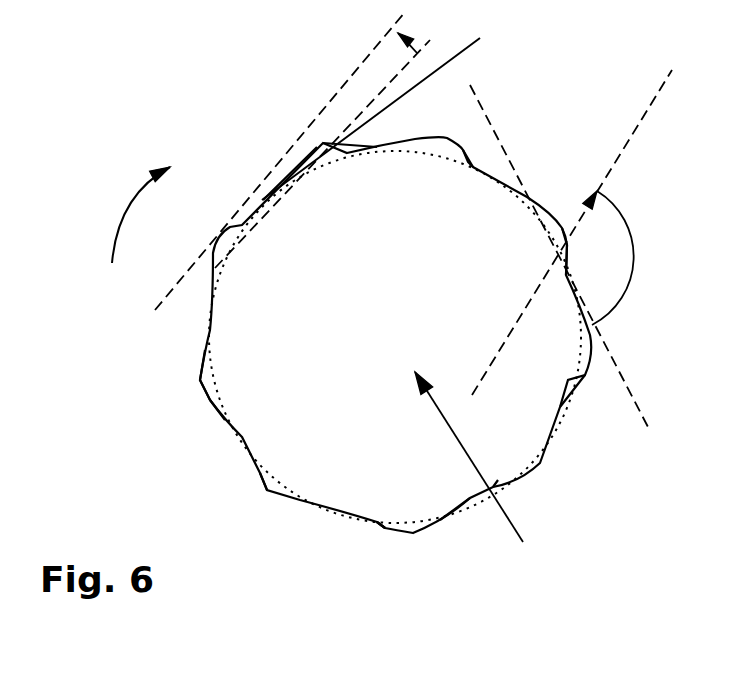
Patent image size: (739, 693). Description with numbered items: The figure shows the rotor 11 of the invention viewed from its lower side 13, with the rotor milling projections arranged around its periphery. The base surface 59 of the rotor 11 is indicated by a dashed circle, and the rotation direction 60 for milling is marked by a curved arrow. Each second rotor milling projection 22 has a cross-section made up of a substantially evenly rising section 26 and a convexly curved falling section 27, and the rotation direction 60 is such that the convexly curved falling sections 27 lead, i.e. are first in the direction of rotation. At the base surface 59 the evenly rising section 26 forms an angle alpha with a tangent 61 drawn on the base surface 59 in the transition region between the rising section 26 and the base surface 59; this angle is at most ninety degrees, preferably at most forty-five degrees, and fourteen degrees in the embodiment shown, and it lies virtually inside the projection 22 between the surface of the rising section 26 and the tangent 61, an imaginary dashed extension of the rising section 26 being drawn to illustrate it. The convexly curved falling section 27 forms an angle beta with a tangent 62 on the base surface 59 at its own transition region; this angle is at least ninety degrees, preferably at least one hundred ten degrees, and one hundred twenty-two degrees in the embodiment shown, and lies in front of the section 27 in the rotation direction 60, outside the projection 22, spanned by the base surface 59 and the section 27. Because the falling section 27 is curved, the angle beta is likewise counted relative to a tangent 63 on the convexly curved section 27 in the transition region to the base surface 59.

The rotor 11 is at (363, 557).
The lower side 13 is at (489, 471).
The second rotor milling projection 22 is at (208, 381).
The evenly rising section 26 is at (300, 152).
The convexly curved falling section 27 is at (567, 245).
The base surface 59 is at (523, 462).
The rotation direction 60 is at (112, 217).
The tangent 61 is at (337, 160).
The tangent 62 is at (632, 393).
The tangent 63 is at (632, 147).